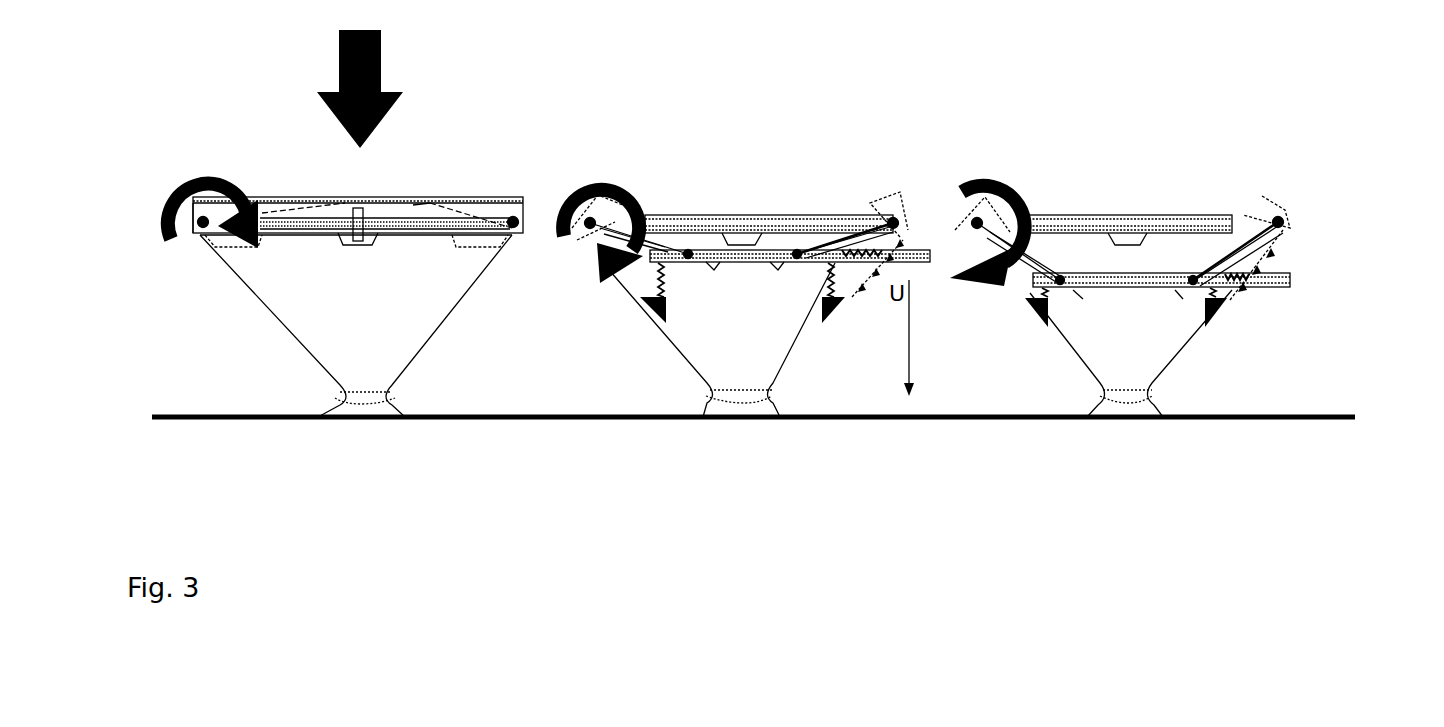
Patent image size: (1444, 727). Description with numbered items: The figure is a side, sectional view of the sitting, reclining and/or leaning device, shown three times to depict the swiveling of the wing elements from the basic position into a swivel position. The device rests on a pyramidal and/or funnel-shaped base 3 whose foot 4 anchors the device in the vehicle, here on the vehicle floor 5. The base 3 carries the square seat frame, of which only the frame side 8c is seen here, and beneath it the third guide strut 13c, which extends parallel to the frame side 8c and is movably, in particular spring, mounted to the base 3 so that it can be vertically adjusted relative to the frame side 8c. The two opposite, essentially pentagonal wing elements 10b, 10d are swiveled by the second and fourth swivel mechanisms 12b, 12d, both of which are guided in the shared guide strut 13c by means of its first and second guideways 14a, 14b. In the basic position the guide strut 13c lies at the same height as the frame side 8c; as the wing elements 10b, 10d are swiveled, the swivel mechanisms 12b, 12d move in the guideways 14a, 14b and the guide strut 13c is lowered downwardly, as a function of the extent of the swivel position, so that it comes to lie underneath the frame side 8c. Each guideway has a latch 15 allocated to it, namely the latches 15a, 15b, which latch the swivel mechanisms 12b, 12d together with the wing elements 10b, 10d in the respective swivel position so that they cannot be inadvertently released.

The base 3 is at (298, 313).
The foot 4 is at (352, 402).
The vehicle floor 5 is at (753, 457).
The frame side 8c is at (382, 225).
The wing element 10b is at (298, 202).
The wing element 10d is at (413, 205).
The swivel mechanism 12b is at (218, 212).
The swivel mechanism 12d is at (477, 212).
The guide strut 13c is at (740, 260).
The guideway 14a is at (677, 252).
The guideway 14b is at (795, 253).
The latch 15 is at (1290, 287).
The latch 15a is at (688, 257).
The latch 15b is at (803, 257).